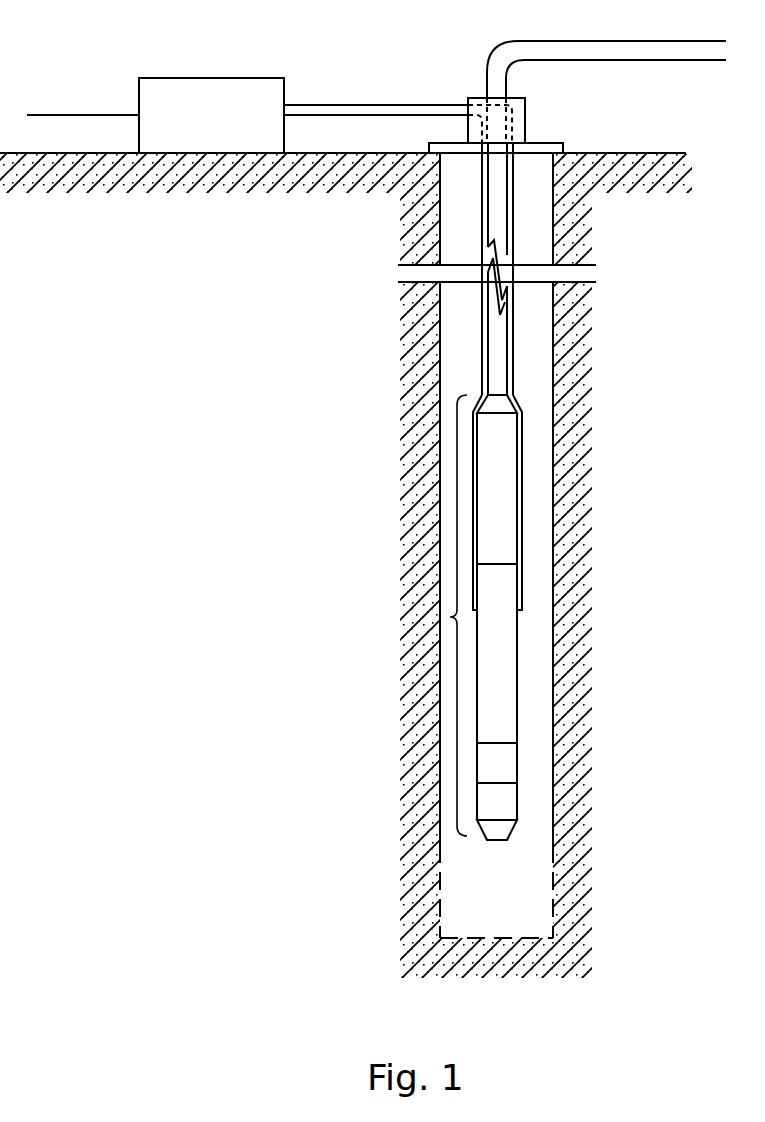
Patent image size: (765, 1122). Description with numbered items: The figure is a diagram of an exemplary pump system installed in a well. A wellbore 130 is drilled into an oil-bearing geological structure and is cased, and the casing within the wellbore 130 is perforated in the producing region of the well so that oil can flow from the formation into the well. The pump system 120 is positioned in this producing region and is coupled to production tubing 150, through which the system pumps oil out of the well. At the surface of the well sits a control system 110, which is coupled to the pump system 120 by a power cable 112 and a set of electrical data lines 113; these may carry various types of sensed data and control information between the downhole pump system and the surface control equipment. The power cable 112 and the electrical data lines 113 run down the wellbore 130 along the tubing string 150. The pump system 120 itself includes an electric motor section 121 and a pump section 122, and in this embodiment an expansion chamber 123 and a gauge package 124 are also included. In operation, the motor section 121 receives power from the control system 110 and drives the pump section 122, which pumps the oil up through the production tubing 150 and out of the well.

The control system 110 is at (212, 78).
The power cable 112 is at (370, 105).
The electrical data lines 113 is at (420, 105).
The pump system 120 is at (450, 617).
The electric motor section 121 is at (518, 653).
The pump section 122 is at (517, 435).
The expansion chamber 123 is at (518, 767).
The gauge package 124 is at (518, 810).
The wellbore 130 is at (552, 520).
The production tubing 150 is at (508, 348).